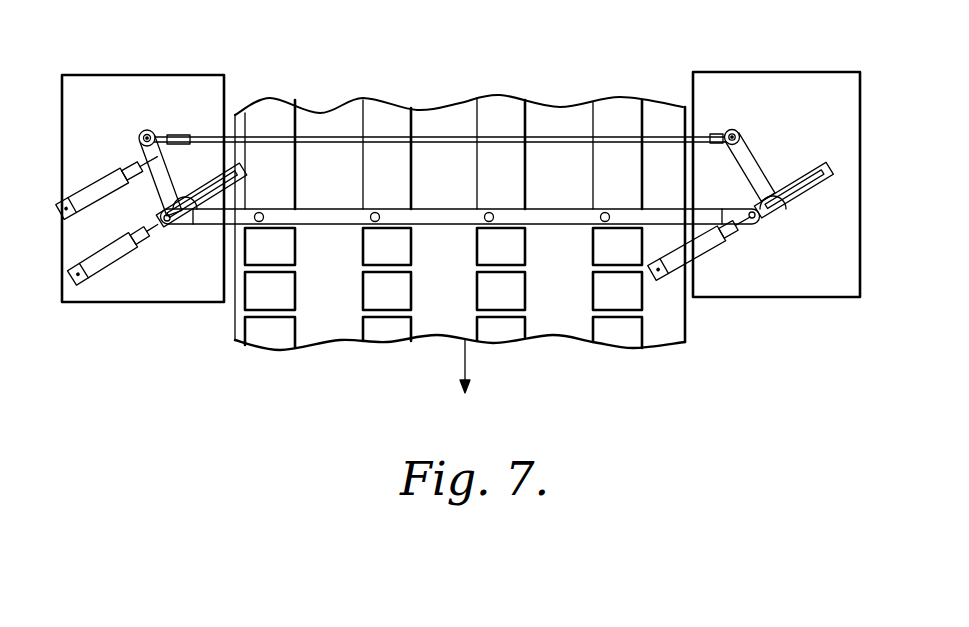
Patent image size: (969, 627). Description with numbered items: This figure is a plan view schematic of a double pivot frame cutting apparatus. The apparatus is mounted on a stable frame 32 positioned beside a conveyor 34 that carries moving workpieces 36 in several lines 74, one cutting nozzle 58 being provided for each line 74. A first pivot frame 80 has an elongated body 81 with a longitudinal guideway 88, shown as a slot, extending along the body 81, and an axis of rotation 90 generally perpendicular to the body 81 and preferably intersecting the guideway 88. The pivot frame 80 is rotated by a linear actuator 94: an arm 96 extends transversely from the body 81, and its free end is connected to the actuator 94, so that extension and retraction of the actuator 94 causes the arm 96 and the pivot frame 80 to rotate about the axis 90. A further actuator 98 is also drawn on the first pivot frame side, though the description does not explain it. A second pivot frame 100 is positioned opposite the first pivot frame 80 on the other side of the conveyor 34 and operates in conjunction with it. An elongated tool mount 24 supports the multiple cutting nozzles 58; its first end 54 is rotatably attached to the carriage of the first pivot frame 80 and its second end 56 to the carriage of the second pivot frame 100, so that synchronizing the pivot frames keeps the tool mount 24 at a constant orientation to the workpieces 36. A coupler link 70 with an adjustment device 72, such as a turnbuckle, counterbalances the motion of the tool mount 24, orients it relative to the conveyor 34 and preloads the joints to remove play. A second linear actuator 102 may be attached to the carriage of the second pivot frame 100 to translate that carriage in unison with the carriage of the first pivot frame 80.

The tool mount 24 is at (423, 214).
The stable frame 32 is at (147, 292).
The conveyor 34 is at (548, 328).
The moving workpiece 36 is at (280, 122).
The first end 54 is at (183, 225).
The second end 56 is at (735, 210).
The cutting nozzle 58 is at (260, 212).
The coupler link 70 is at (578, 135).
The adjustment device 72 is at (186, 133).
The line 74 is at (285, 90).
The pivot frame 80 is at (150, 194).
The elongated body 81 is at (800, 197).
The longitudinal guideway 88 is at (232, 172).
The axis of rotation 90 is at (177, 195).
The linear actuator 94 is at (60, 203).
The arm 96 is at (163, 180).
The lower left actuator cylinder 98 is at (88, 272).
The second pivot frame 100 is at (838, 160).
The second linear actuator 102 is at (670, 267).